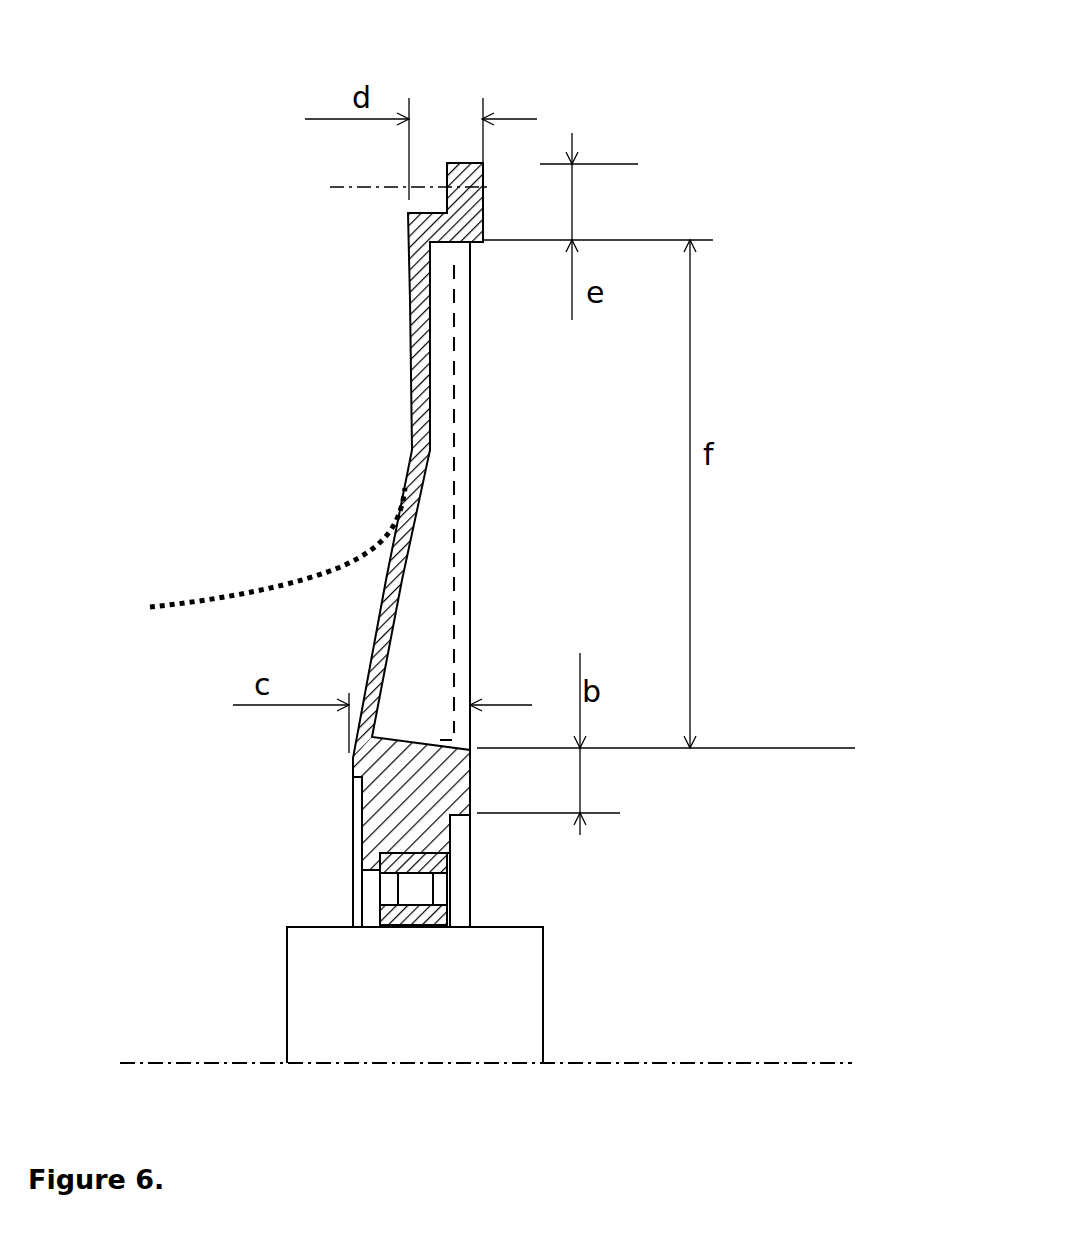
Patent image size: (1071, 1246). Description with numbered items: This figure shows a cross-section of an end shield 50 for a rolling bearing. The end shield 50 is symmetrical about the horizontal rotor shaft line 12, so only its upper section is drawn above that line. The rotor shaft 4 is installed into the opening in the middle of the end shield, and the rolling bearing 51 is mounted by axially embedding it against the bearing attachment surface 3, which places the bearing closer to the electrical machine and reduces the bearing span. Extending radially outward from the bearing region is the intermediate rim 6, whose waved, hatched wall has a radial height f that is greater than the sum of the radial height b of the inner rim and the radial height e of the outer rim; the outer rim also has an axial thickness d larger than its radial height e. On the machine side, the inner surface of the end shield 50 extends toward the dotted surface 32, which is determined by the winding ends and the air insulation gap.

The end shield 50 is at (700, 88).
The intermediate rim 6 is at (410, 417).
The surface determined by the winding ends and the air insulation gap 32 is at (332, 573).
The bearing attachment surface 3 is at (365, 852).
The rolling bearing 51 is at (387, 905).
The rotor shaft 4 is at (455, 1002).
The rotor shaft line 12 is at (850, 1065).